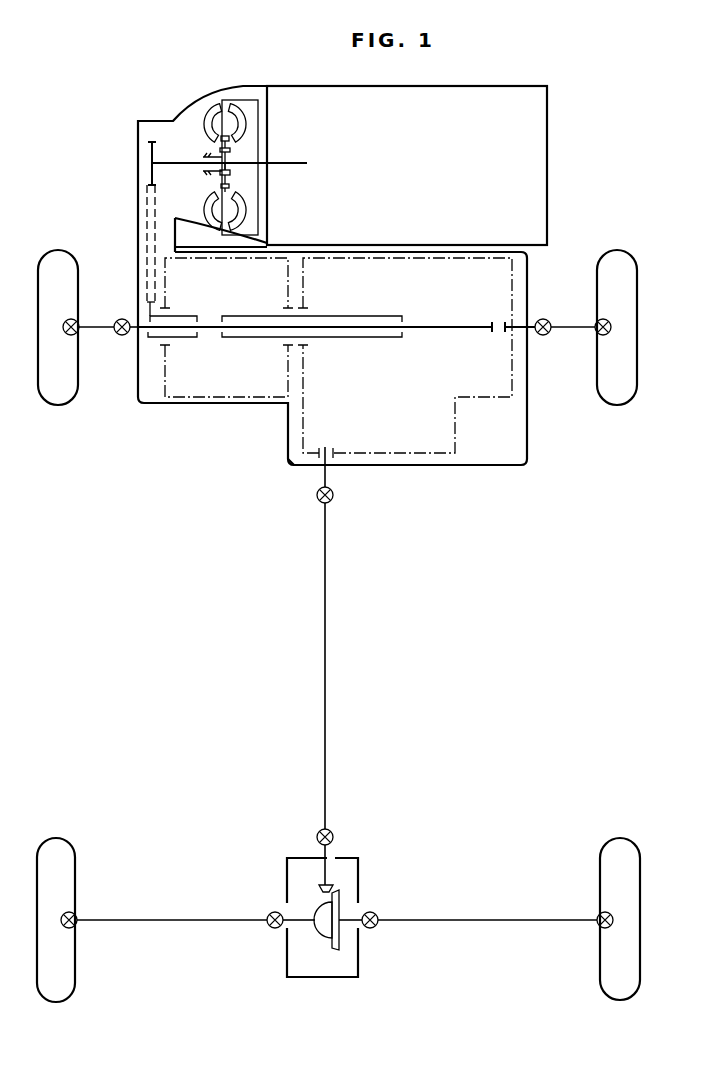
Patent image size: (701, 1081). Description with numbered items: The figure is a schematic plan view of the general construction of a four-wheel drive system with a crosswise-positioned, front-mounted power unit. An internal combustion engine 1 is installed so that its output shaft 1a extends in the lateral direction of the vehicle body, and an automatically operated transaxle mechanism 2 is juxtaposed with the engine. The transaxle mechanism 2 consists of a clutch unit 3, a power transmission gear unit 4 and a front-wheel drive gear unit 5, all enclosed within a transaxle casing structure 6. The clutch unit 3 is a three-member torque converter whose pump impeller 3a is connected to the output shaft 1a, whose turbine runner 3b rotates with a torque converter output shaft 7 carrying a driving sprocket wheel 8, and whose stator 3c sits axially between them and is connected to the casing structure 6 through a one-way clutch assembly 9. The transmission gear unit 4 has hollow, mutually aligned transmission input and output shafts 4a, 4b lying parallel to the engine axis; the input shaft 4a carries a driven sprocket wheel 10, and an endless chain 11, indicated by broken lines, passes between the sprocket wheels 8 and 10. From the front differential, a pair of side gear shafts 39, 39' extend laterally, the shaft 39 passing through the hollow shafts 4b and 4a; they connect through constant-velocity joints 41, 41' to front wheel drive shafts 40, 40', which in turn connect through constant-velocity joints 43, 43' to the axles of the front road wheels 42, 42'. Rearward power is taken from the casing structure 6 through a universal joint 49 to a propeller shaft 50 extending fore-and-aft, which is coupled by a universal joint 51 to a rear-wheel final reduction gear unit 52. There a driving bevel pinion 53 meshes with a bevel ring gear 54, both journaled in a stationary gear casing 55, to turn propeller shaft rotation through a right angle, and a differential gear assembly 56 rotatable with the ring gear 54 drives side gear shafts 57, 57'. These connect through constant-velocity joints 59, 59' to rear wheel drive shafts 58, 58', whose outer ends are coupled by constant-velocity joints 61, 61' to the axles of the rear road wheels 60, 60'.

The internal combustion engine 1 is at (396, 179).
The output shaft 1a is at (297, 163).
The transaxle mechanism 2 is at (240, 446).
The clutch unit 3 is at (229, 79).
The pump impeller 3a is at (200, 120).
The turbine runner 3b is at (250, 125).
The stator 3c is at (214, 187).
The power transmission gear unit 4 is at (219, 294).
The transmission input shaft 4a is at (183, 338).
The transmission output shaft 4b is at (263, 338).
The front-wheel drive gear unit 5 is at (375, 406).
The transaxle casing structure 6 is at (453, 467).
The torque converter output shaft 7 is at (185, 163).
The driving sprocket wheel 8 is at (152, 158).
The one-way clutch assembly 9 is at (235, 176).
The driven sprocket wheel 10 is at (147, 313).
The endless chain 11 is at (140, 222).
The side gear shaft 39 is at (336, 310).
The side gear shaft 39' is at (540, 305).
The front wheel drive shaft 40 is at (96, 346).
The front wheel drive shaft 40' is at (573, 347).
The constant-velocity joint 41 is at (123, 344).
The constant-velocity joint 41' is at (541, 345).
The front road wheel 42 is at (58, 347).
The front road wheel 42' is at (617, 350).
The constant-velocity joint 43 is at (83, 309).
The constant-velocity joint 43' is at (586, 307).
The universal joint 49 is at (334, 495).
The propeller shaft 50 is at (327, 630).
The universal joint 51 is at (334, 836).
The rear-wheel final reduction gear unit 52 is at (299, 992).
The driving bevel pinion 53 is at (320, 888).
The bevel ring gear 54 is at (338, 950).
The stationary gear casing 55 is at (287, 966).
The differential gear assembly 56 is at (320, 935).
The side gear shaft 57 is at (283, 894).
The side gear shaft 57' is at (368, 894).
The rear wheel drive shaft 58 is at (172, 942).
The rear wheel drive shaft 58' is at (487, 941).
The constant-velocity joint 59 is at (255, 909).
The constant-velocity joint 59' is at (377, 942).
The rear road wheel 60 is at (80, 918).
The rear road wheel 60' is at (599, 915).
The constant-velocity joint 61 is at (87, 904).
The constant-velocity joint 61' is at (582, 909).